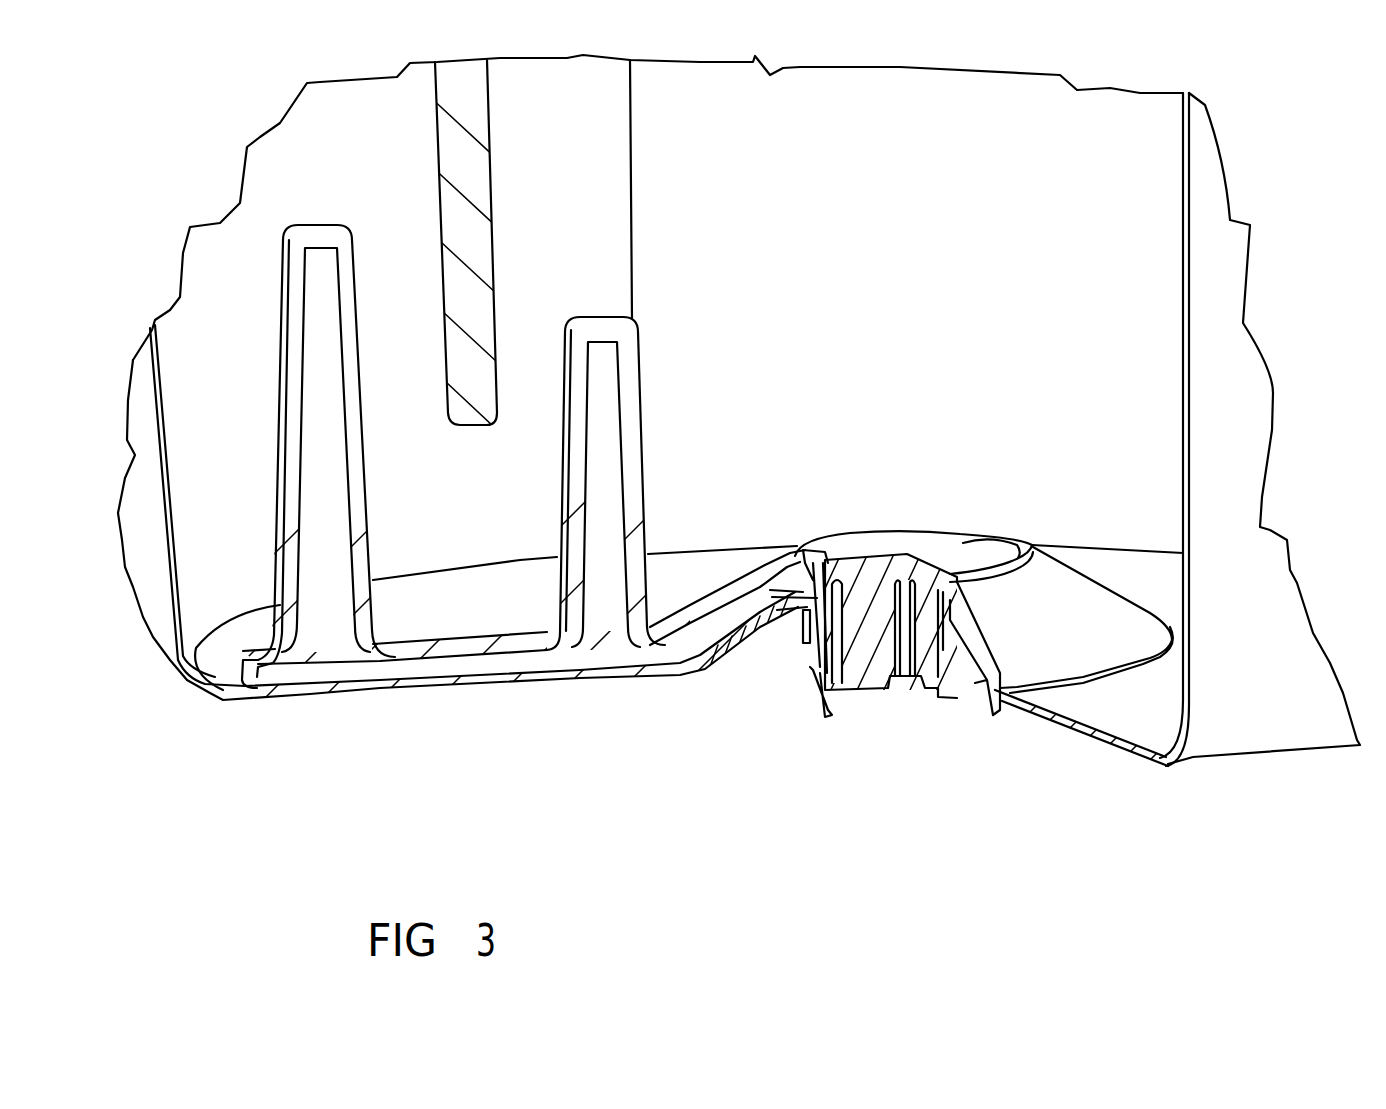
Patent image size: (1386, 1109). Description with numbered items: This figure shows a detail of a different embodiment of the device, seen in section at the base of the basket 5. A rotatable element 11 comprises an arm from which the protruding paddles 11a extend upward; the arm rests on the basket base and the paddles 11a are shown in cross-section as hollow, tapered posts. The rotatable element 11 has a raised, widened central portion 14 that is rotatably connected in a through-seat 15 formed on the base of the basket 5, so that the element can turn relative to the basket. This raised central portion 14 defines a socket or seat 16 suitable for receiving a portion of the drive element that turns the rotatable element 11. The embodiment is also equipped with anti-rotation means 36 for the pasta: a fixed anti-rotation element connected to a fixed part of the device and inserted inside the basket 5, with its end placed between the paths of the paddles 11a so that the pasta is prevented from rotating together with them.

The basket 5 is at (1228, 745).
The rotatable element 11 is at (956, 430).
The protruding paddles 11a is at (628, 330).
The anti-rotation means 36 is at (485, 233).
The central portion 14 is at (990, 558).
The through-seat 15 is at (810, 637).
The seat 16 is at (877, 677).